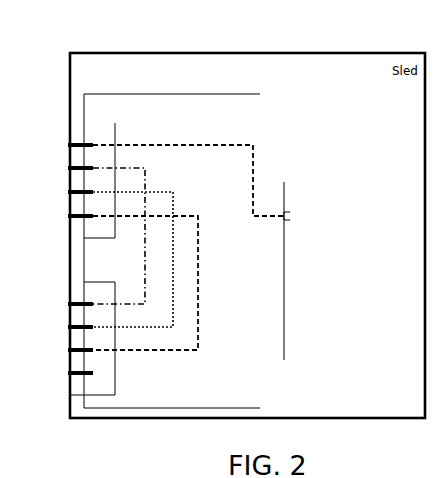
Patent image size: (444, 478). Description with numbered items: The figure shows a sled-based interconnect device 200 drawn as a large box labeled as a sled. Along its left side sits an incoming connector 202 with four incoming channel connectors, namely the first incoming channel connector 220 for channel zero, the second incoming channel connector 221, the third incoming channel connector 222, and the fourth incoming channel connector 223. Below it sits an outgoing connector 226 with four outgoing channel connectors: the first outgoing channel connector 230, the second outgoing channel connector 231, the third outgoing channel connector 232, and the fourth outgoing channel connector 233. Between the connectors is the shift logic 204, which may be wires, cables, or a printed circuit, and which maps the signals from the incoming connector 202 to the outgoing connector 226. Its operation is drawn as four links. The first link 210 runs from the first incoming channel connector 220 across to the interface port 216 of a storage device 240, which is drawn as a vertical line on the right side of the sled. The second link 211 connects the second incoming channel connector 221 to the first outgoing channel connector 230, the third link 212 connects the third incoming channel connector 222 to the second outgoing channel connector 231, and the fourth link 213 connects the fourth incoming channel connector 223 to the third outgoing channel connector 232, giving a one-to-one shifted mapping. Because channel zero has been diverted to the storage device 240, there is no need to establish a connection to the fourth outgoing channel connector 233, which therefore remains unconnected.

The sled-based interconnect device 200 is at (120, 52).
The incoming connector 202 is at (80, 131).
The shift logic 204 is at (143, 92).
The first link 210 is at (198, 143).
The second link 211 is at (143, 268).
The third link 212 is at (158, 190).
The fourth link 213 is at (200, 272).
The interface port 216 is at (290, 215).
The first incoming channel connector 220 is at (68, 146).
The second incoming channel connector 221 is at (68, 169).
The third incoming channel connector 222 is at (68, 193).
The fourth incoming channel connector 223 is at (68, 217).
The outgoing connector 226 is at (80, 292).
The first outgoing channel connector 230 is at (68, 305).
The second outgoing channel connector 231 is at (68, 328).
The third outgoing channel connector 232 is at (68, 351).
The fourth outgoing channel connector 233 is at (68, 374).
The storage device 240 is at (328, 178).